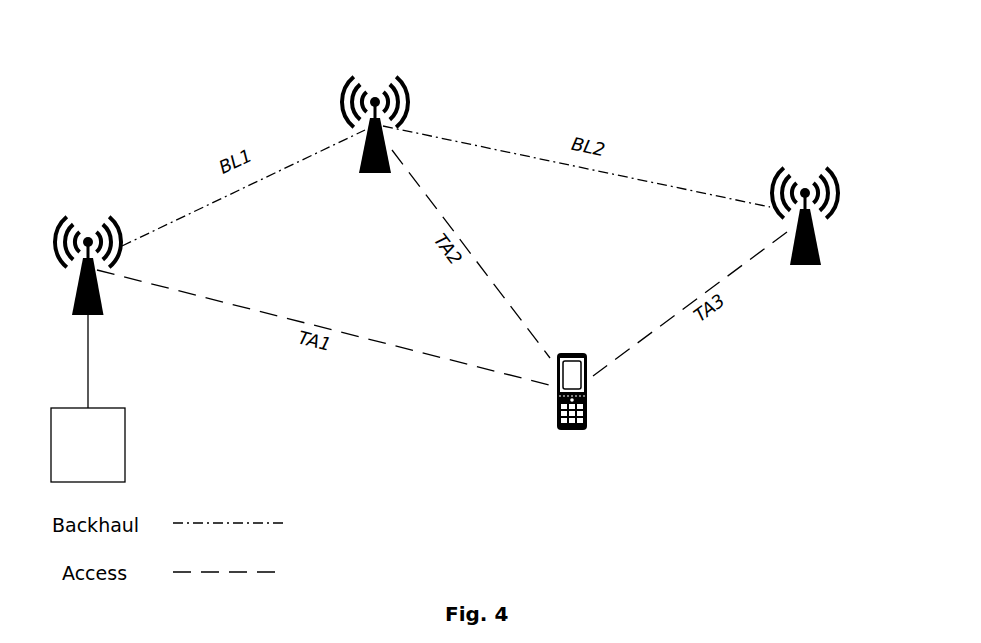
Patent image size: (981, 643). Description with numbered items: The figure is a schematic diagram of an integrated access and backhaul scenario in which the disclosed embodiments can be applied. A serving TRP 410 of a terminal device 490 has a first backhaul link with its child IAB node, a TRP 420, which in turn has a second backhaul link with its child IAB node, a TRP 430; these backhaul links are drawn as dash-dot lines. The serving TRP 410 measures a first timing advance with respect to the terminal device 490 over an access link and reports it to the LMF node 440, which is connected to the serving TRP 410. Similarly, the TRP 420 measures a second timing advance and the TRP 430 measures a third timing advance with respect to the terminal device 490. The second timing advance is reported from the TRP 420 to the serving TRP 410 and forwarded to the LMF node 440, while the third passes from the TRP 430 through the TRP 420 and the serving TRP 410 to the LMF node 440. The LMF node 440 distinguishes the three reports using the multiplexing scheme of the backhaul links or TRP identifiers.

The serving TRP 410 is at (93, 225).
The TRP 420 is at (387, 83).
The TRP 430 is at (809, 172).
The LMF node 440 is at (88, 398).
The terminal device 490 is at (573, 407).